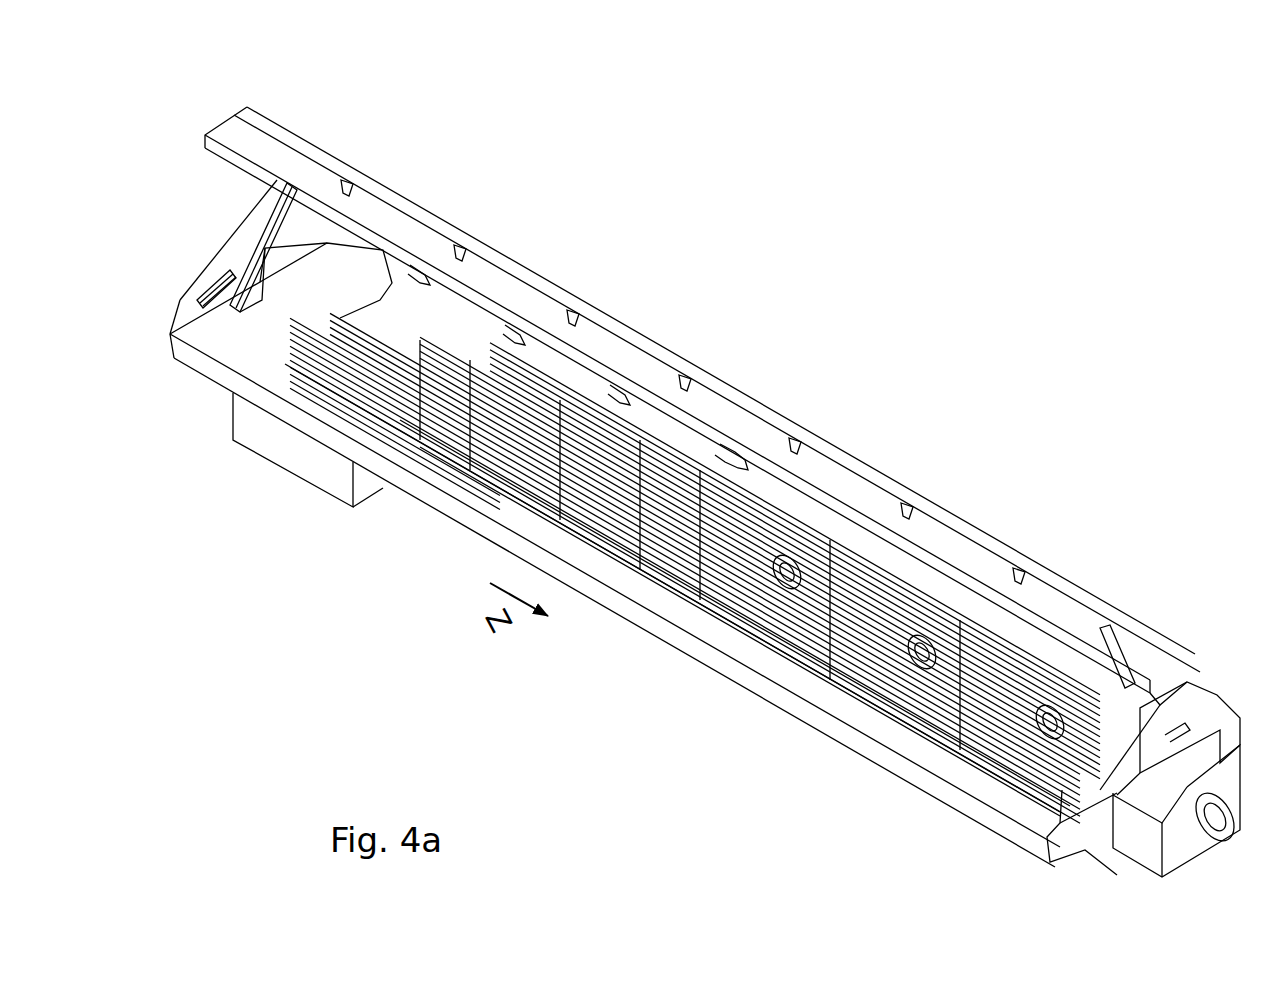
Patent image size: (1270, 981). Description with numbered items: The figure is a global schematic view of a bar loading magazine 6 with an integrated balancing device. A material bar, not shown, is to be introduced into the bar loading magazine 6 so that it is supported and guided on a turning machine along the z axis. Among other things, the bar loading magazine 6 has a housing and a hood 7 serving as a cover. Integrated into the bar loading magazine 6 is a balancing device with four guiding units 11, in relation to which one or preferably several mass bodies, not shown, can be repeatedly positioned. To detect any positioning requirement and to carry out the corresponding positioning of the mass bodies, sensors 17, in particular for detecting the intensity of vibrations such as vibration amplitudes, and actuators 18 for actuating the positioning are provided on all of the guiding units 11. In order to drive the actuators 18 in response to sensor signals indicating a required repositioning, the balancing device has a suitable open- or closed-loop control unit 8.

The bar loading magazine 6 is at (852, 199).
The hood 7 is at (495, 238).
The open- or closed-loop control unit 8 is at (288, 454).
The guiding units 11 is at (797, 551).
The sensors 17 is at (1001, 712).
The actuators 18 is at (1185, 803).